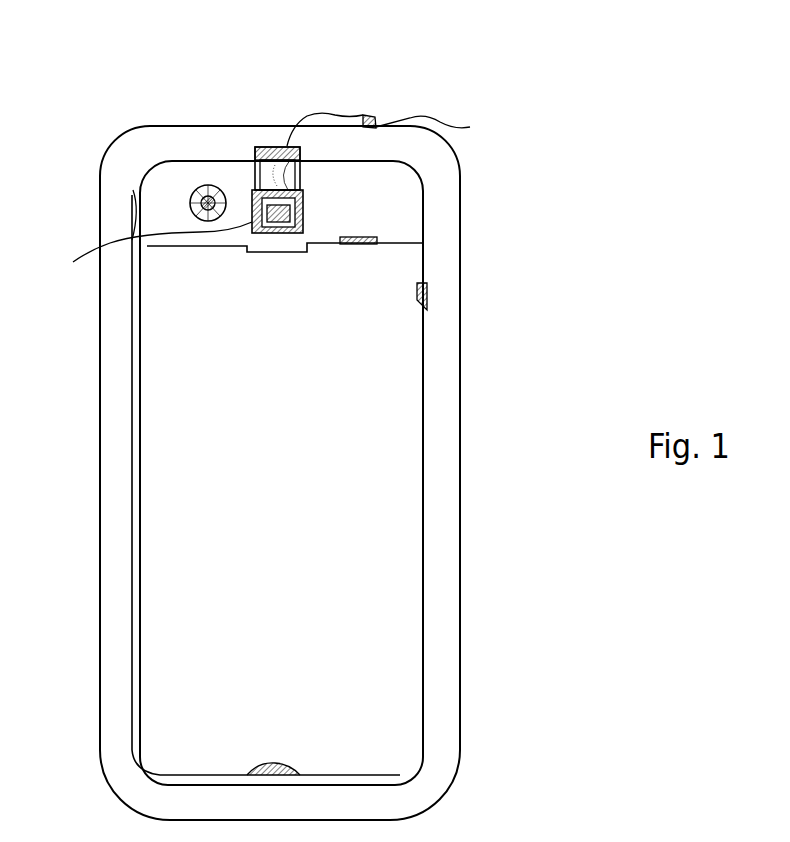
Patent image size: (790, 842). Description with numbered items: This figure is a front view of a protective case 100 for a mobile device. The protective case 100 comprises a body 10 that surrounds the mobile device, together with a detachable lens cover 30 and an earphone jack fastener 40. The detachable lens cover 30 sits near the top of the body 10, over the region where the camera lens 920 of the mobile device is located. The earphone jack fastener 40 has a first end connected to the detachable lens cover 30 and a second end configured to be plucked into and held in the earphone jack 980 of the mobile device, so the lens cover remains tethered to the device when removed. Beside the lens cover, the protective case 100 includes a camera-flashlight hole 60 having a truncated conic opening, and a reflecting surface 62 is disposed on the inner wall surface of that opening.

The body 10 is at (450, 402).
The protective case 100 is at (592, 50).
The detachable lens cover 30 is at (267, 147).
The earphone jack fastener 40 is at (372, 115).
The camera-flashlight hole 60 is at (197, 186).
The reflecting surface 62 is at (221, 190).
The camera lens 920 is at (139, 255).
The earphone jack 980 is at (453, 130).